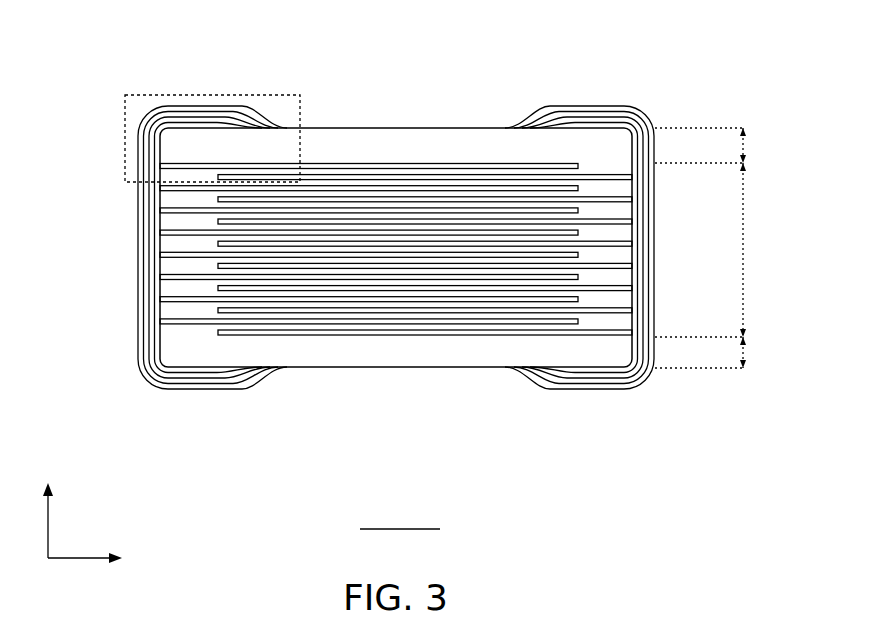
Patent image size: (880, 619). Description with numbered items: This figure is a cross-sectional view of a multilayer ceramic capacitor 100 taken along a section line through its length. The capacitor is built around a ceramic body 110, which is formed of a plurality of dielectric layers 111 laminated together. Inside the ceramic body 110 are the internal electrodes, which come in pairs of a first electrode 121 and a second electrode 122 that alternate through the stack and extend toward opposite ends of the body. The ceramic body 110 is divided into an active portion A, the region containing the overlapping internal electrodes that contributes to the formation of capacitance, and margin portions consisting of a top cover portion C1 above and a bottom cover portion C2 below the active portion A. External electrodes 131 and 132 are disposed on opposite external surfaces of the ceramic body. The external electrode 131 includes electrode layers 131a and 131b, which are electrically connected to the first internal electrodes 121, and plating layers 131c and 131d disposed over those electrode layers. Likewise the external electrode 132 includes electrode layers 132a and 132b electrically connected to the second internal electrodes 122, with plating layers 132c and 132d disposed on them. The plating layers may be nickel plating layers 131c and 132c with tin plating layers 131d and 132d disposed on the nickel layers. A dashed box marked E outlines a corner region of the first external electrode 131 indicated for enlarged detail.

The multilayer ceramic capacitor 100 is at (425, 30).
The ceramic body 110 is at (398, 127).
The dielectric layer 111 is at (620, 212).
The first electrode 121 is at (580, 190).
The second electrode 122 is at (613, 247).
The external electrode 131 is at (221, 307).
The electrode layer 131a is at (243, 395).
The electrode layer 131b is at (222, 393).
The nickel plating layer 131c is at (195, 388).
The tin plating layer 131d is at (193, 284).
The external electrode 132 is at (575, 307).
The electrode layer 132a is at (550, 392).
The electrode layer 132b is at (572, 393).
The nickel plating layer 132c is at (600, 393).
The tin plating layer 132d is at (600, 284).
The enlarged detail region E is at (124, 168).
The top cover portion C1 is at (716, 145).
The bottom cover portion C2 is at (715, 352).
The active portion A is at (755, 250).